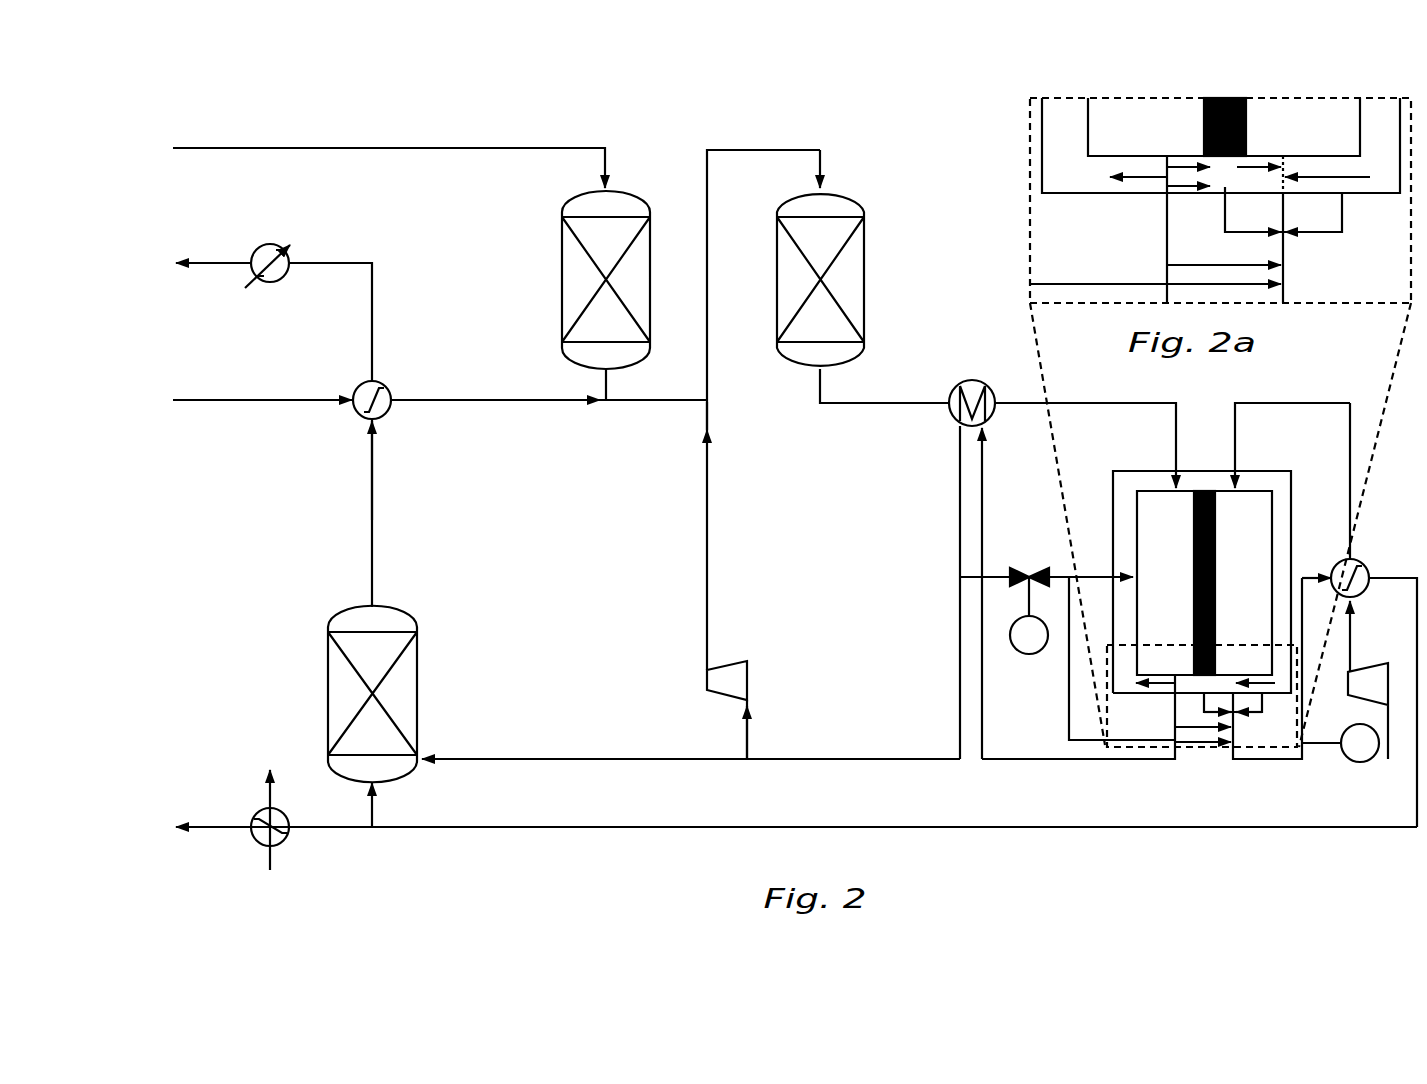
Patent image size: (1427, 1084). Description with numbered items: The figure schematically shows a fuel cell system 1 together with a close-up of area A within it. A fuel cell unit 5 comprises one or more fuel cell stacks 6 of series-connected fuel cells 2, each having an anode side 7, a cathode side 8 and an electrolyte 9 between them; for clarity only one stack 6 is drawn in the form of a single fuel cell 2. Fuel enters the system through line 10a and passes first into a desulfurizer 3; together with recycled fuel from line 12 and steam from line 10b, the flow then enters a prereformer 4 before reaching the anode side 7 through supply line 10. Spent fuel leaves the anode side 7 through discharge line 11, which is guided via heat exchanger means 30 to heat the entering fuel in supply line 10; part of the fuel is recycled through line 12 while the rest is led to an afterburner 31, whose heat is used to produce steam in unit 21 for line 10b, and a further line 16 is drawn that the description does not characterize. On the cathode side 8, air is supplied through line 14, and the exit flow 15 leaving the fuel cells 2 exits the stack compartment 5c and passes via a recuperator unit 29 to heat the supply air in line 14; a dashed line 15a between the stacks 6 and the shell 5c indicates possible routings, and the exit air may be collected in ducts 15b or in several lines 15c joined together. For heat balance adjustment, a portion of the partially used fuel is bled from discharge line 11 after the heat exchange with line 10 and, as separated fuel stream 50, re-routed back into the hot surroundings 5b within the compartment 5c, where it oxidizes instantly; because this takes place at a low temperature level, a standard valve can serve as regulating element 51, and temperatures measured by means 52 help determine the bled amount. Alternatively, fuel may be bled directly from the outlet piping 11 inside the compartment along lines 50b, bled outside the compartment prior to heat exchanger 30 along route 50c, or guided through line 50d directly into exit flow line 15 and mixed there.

In FIG. 2, the fuel cell system 1 is at (310, 106).
In FIG. 2, the fuel cell 2 is at (1137, 525).
In FIG. 2A, the fuel cell 2 is at (1088, 125).
In FIG. 2, the desulfurizer 3 is at (562, 246).
In FIG. 2, the prereformer 4 is at (778, 254).
In FIG. 2, the fuel cell unit 5 is at (1085, 464).
In FIG. 2, the hot volume of fuel cell compartment 5b is at (1130, 471).
In FIG. 2A, the hot volume of fuel cell compartment 5b is at (1075, 97).
In FIG. 2, the stack compartment 5c is at (1290, 474).
In FIG. 2A, the stack compartment 5c is at (1113, 195).
In FIG. 2, the fuel cell stack 6 is at (1277, 578).
In FIG. 2A, the fuel cell stack 6 is at (1367, 118).
In FIG. 2, the anode side 7 is at (1157, 491).
In FIG. 2A, the anode side 7 is at (1145, 98).
In FIG. 2, the cathode side 8 is at (1257, 491).
In FIG. 2A, the cathode side 8 is at (1283, 98).
In FIG. 2, the electrolyte 9 is at (1205, 491).
In FIG. 2A, the electrolyte 9 is at (1225, 127).
In FIG. 2, the supply line 10 is at (800, 152).
In FIG. 2, the fuel inlet line 10a is at (598, 148).
In FIG. 2, the steam line 10b is at (572, 397).
In FIG. 2, the discharge line 11 is at (870, 759).
In FIG. 2A, the discharge line 11 is at (1167, 214).
In FIG. 2, the recycle line 12 is at (707, 520).
In FIG. 2, the air supply line 14 is at (1243, 414).
In FIG. 2, the cathode exit flow line 15 is at (240, 825).
In FIG. 2A, the cathode exit flow line 15 is at (1283, 272).
In FIG. 2, the dashed routing line 15a is at (1245, 683).
In FIG. 2A, the dashed routing line 15a is at (1283, 172).
In FIG. 2, the exit air ducts 15b is at (1278, 642).
In FIG. 2A, the exit air ducts 15b is at (1241, 165).
In FIG. 2, the connected exit lines 15c is at (1250, 712).
In FIG. 2A, the connected exit lines 15c is at (1315, 235).
In FIG. 2, the product line 16 is at (243, 264).
In FIG. 2, the steam producing unit 21 is at (357, 391).
In FIG. 2, the recuperator unit 29 is at (1355, 560).
In FIG. 2, the heat exchanger means 30 is at (955, 385).
In FIG. 2, the afterburner 31 is at (330, 682).
In FIG. 2, the separated fuel stream 50 is at (1072, 573).
In FIG. 2, the direct bleeding lines 50b is at (1165, 683).
In FIG. 2A, the direct bleeding lines 50b is at (1166, 181).
In FIG. 2, the external bleeding route 50c is at (1190, 723).
In FIG. 2A, the external bleeding route 50c is at (1167, 257).
In FIG. 2, the bypass line to exit flow 50d is at (1069, 715).
In FIG. 2A, the bypass line to exit flow 50d is at (1130, 181).
In FIG. 2, the regulating element 51 is at (1036, 565).
In FIG. 2, the temperature measuring means 52 is at (1347, 762).
In FIG. 2, the area A is at (1119, 647).
In FIG. 2A, the area A is at (1113, 98).